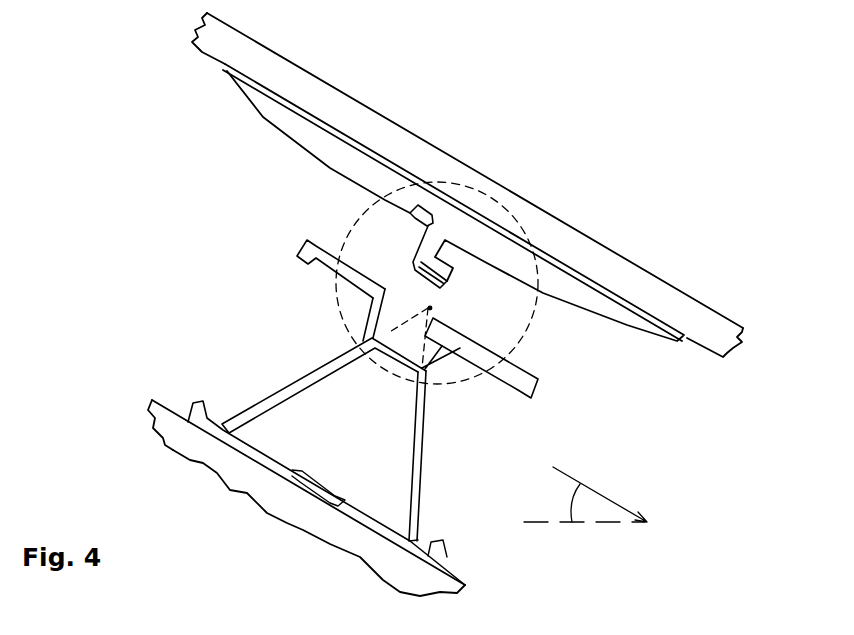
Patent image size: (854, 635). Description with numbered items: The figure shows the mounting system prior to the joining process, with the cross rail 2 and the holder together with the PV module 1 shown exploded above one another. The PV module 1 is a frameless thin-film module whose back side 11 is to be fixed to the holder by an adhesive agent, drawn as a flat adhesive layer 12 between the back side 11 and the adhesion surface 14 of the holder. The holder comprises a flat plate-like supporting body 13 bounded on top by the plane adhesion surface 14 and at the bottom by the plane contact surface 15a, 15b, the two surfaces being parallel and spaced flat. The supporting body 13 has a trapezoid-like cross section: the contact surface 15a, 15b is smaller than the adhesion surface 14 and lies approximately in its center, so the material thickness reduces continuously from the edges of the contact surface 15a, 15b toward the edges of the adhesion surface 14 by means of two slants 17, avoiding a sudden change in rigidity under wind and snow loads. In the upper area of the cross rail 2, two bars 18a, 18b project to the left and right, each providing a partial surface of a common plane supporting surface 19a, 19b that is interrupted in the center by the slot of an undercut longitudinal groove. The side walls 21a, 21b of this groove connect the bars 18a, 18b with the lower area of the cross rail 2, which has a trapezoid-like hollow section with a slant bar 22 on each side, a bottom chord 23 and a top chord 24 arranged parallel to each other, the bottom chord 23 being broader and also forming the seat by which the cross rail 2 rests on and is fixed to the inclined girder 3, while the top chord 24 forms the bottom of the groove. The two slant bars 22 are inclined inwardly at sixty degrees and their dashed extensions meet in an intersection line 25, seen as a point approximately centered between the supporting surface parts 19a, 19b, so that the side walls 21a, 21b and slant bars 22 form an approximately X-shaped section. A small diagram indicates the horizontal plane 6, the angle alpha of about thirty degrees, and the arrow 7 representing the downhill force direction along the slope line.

The PV module 1 is at (400, 142).
The cross rail 2 is at (376, 390).
The inclined girder 3 is at (306, 498).
The horizontal plane 6 is at (598, 527).
The arrow 7 is at (600, 492).
The back side 11 is at (201, 60).
The adhesive layer 12 is at (219, 71).
The supporting body 13 is at (353, 157).
The adhesion surface 14 is at (619, 286).
The contact surface 15a is at (325, 174).
The contact surface 15b is at (568, 317).
The slant 17 is at (257, 110).
The bar 18a is at (333, 280).
The bar 18b is at (508, 373).
The supporting surface 19a is at (363, 272).
The supporting surface 19b is at (495, 340).
The side wall 21a is at (370, 318).
The side wall 21b is at (447, 367).
The slant bar 22 is at (290, 387).
The bottom chord 23 is at (282, 468).
The top chord 24 is at (392, 352).
The intersection line 25 is at (432, 308).